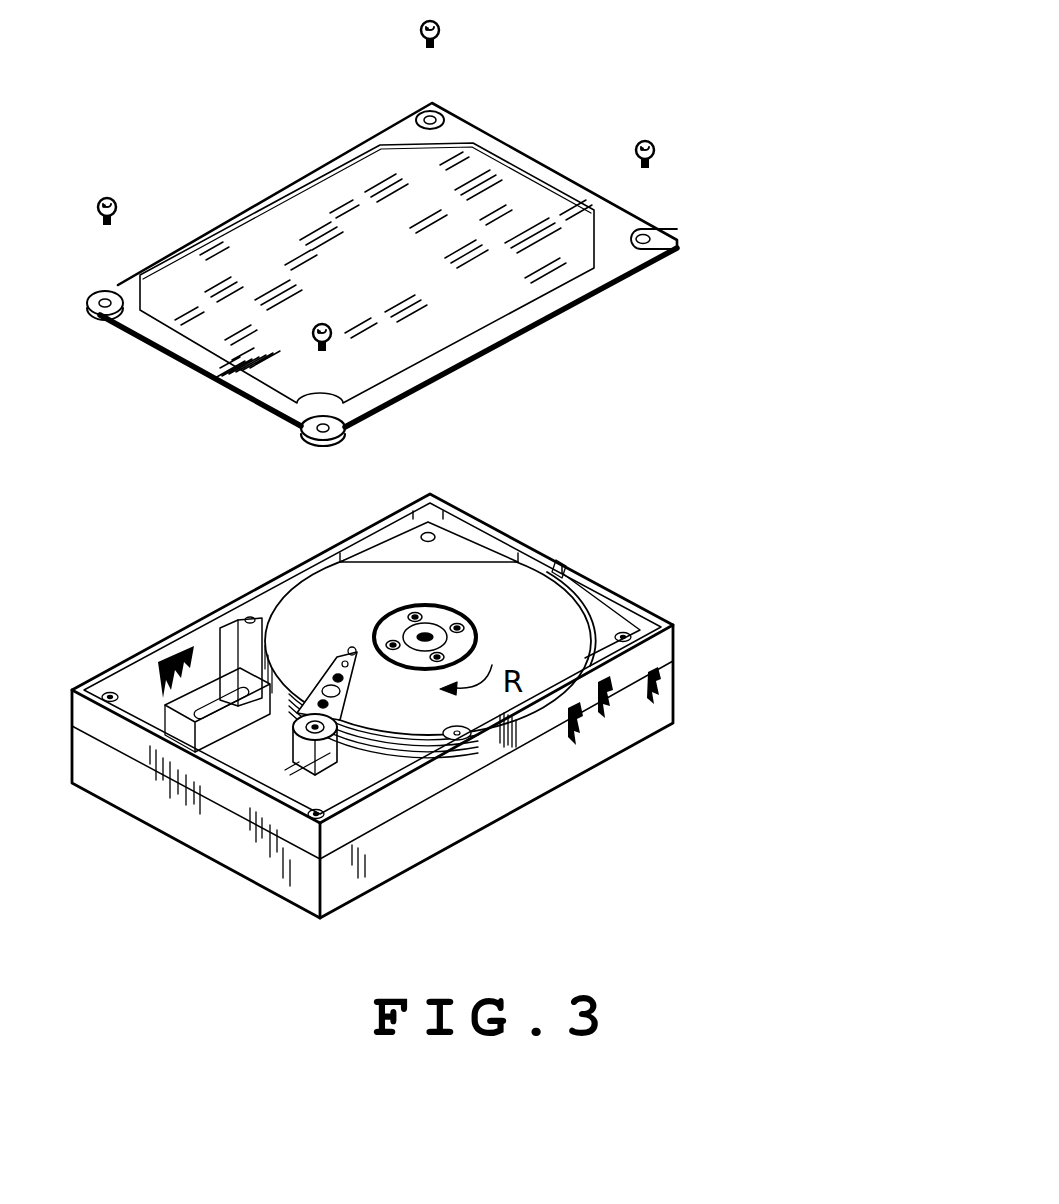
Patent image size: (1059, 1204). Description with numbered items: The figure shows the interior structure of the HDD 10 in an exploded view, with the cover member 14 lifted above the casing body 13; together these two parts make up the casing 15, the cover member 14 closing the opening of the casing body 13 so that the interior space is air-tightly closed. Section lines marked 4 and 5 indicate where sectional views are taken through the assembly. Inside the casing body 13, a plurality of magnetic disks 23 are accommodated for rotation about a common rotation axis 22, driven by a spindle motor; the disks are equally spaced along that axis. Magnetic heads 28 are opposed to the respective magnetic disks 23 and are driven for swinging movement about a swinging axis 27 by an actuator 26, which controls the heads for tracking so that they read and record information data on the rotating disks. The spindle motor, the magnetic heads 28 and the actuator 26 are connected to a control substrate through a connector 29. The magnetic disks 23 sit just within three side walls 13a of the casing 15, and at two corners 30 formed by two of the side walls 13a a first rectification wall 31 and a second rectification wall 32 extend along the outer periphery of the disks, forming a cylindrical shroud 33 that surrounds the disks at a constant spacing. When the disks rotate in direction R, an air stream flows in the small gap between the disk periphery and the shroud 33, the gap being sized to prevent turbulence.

The HDD 10 is at (676, 84).
The casing body 13 is at (556, 560).
The side walls 13a is at (300, 562).
The cover member 14 is at (610, 286).
The casing 15 is at (658, 303).
The rotation axis 22 is at (430, 636).
The magnetic disks 23 is at (432, 742).
The actuator 26 is at (358, 764).
The swinging axis 27 is at (337, 723).
The magnetic heads 28 is at (348, 655).
The connector 29 is at (197, 723).
The corners 30 is at (388, 517).
The first rectification wall 31 is at (415, 558).
The second rectification wall 32 is at (587, 619).
The cylindrical shroud 33 is at (277, 610).
The section line 4- 4 is at (690, 603).
The section line 5- 5 is at (340, 452).